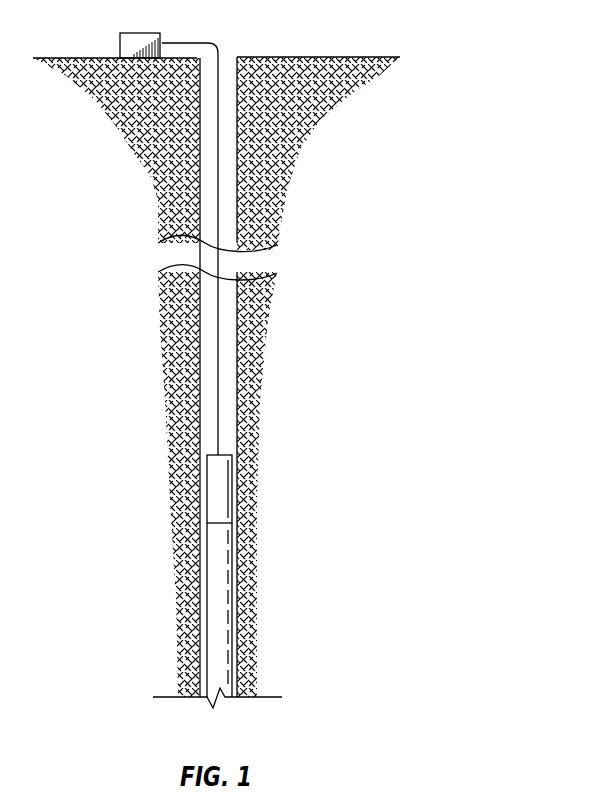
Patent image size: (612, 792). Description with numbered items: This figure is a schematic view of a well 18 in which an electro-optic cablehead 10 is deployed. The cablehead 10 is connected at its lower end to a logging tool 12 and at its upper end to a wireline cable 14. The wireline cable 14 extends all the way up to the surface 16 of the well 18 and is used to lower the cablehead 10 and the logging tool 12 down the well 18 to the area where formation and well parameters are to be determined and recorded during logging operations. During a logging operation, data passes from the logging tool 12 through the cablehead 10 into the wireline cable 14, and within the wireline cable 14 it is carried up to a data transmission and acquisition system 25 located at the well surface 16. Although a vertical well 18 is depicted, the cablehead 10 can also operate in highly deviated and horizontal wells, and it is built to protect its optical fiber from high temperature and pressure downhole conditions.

The cablehead 10 is at (232, 483).
The logging tool 12 is at (230, 619).
The wireline cable 14 is at (219, 378).
The surface 16 is at (298, 57).
The well 18 is at (237, 182).
The data transmission and acquisition system 25 is at (140, 33).